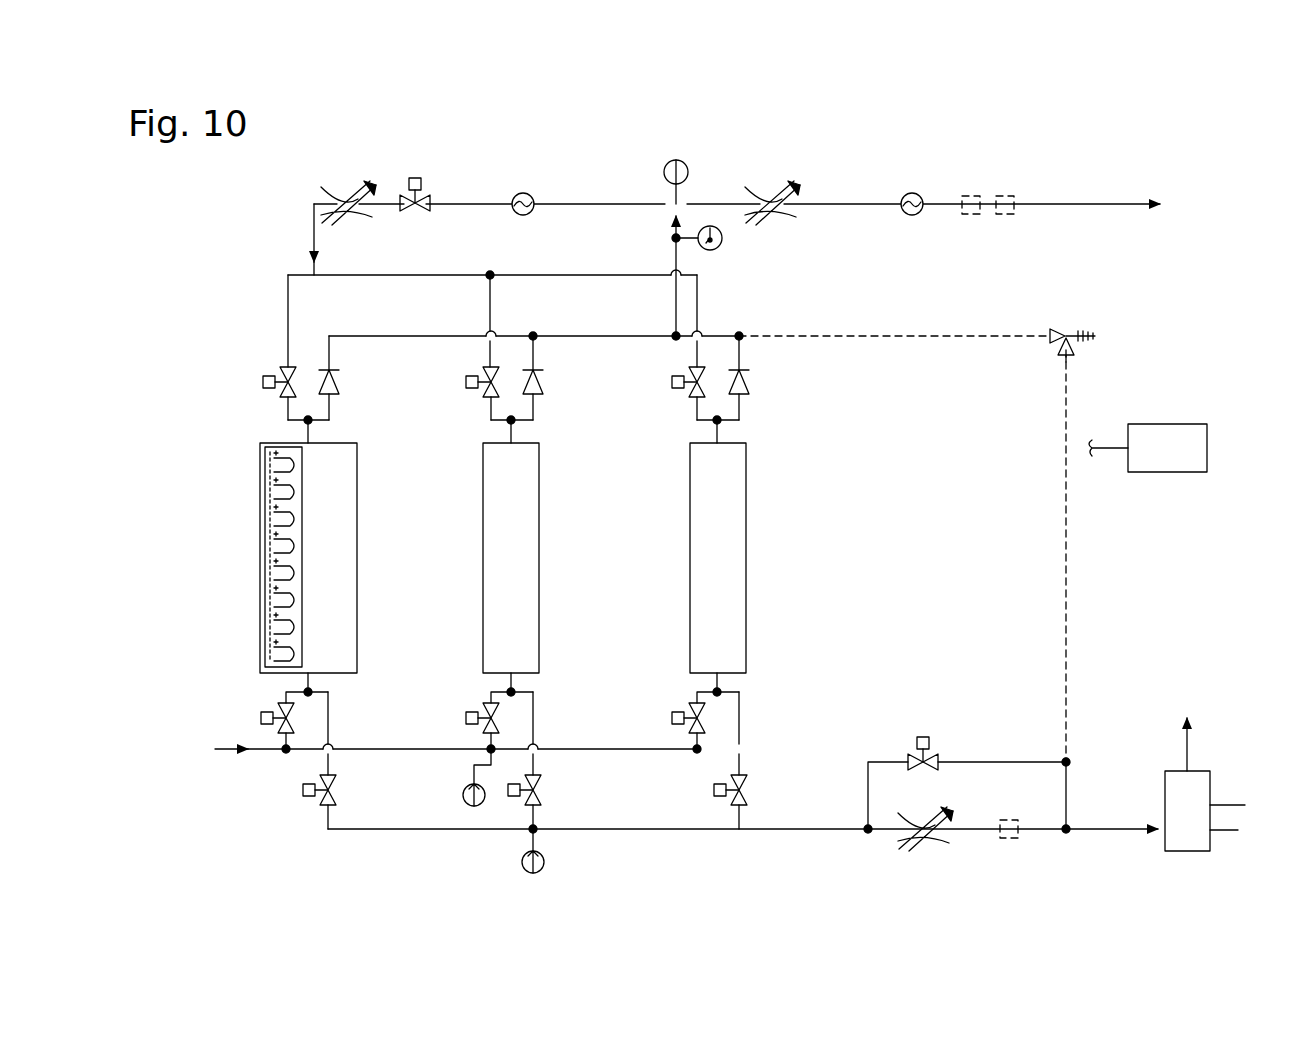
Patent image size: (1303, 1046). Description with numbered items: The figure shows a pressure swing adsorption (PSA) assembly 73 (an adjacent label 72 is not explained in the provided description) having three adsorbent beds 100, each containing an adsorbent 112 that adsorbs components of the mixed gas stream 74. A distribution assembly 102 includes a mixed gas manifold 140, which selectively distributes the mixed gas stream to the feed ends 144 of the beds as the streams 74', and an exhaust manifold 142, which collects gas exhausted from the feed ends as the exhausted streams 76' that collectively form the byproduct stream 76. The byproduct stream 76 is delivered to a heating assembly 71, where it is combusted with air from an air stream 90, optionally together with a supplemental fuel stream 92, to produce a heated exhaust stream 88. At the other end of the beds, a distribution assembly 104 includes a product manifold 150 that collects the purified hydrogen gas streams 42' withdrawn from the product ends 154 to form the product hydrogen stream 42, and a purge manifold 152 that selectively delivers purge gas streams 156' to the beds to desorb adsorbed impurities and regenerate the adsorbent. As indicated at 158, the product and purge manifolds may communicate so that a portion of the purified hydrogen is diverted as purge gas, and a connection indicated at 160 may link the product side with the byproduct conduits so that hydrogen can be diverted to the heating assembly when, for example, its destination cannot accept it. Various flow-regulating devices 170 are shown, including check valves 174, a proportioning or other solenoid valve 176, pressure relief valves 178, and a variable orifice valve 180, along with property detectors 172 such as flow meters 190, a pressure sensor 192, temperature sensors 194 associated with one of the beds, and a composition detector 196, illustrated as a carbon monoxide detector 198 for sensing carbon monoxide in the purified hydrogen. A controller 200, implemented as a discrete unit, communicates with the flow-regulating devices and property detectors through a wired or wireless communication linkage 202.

The product hydrogen stream 42 is at (737, 187).
The purified hydrogen gas streams 42' is at (553, 378).
The heating assembly 71 is at (1215, 782).
The adsorption system 72 is at (168, 296).
The PSA assembly 73 is at (190, 340).
The mixed gas stream 74 is at (448, 726).
The mixed gas streams to feed ends 74' is at (500, 720).
The byproduct stream 76 is at (1114, 804).
The exhausted streams 76' is at (558, 733).
The heated exhaust stream 88 is at (1190, 760).
The air stream 90 is at (1225, 832).
The fuel stream 92 is at (1240, 806).
The adsorbent beds 100 is at (360, 546).
The distribution assembly 102 is at (270, 770).
The distribution assembly 104 is at (268, 307).
The adsorbent 112 is at (330, 575).
The mixed gas manifold 140 is at (302, 755).
The exhaust manifold 142 is at (650, 835).
The feed ends 144 is at (338, 672).
The product manifold 150 is at (420, 333).
The purge manifold 152 is at (565, 273).
The product ends 154 is at (343, 440).
The purge gas streams 156' is at (523, 321).
The fluid communication between product and purge manifolds 158 is at (463, 200).
The fluid connection to byproduct conduits 160 is at (1068, 568).
The flow-regulating devices 170 is at (1045, 352).
The property detectors 172 is at (675, 160).
The check valves 174 is at (742, 398).
The proportioning or other solenoid valves 176 is at (905, 762).
The pressure relief valves 178 is at (1062, 352).
The variable orifice valves 180 is at (925, 840).
The flow meters 190 is at (922, 196).
The pressure sensors 192 is at (686, 168).
The temperature sensors 194 is at (1005, 196).
The composition detectors 196 is at (735, 256).
The carbon monoxide detector 198 is at (735, 243).
The controller 200 is at (1172, 422).
The communication linkage 202 is at (1098, 447).